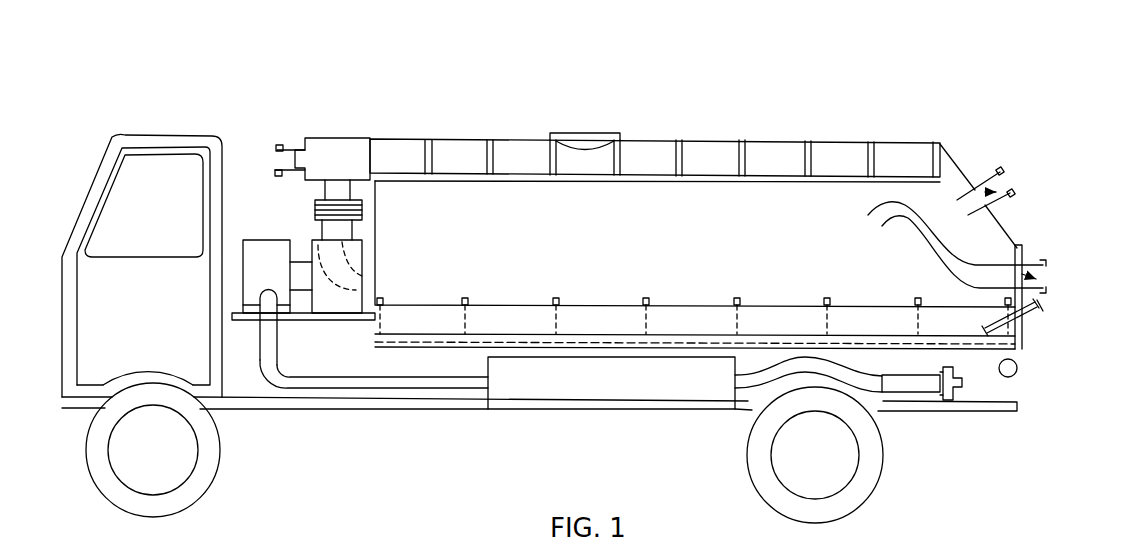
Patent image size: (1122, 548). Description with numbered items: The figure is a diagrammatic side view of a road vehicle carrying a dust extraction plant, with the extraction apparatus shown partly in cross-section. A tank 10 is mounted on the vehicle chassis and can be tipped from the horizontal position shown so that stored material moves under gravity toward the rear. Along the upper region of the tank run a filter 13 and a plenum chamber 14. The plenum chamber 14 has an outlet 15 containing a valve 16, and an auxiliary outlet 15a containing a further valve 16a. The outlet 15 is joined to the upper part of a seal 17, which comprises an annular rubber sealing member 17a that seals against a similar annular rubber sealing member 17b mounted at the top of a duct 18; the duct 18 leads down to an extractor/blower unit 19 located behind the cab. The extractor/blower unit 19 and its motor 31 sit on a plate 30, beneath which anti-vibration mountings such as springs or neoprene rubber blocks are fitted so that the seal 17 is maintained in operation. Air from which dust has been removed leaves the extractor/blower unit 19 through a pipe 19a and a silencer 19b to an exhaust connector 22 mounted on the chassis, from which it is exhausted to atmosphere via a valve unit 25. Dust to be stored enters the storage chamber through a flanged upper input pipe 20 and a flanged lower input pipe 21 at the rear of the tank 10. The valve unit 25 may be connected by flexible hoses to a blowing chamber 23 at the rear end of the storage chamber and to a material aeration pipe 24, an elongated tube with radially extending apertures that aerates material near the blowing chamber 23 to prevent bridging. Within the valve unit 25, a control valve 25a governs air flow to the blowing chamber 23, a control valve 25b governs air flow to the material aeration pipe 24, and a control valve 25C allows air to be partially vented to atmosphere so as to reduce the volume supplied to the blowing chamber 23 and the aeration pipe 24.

The tank 10 is at (953, 133).
The filter 13 is at (700, 178).
The plenum chamber 14 is at (828, 165).
The outlet 15 is at (348, 162).
The auxiliary outlet 15a is at (297, 150).
The valve 16 is at (340, 228).
The valve 16a is at (288, 160).
The seal 17 is at (370, 203).
The annular rubber sealing member 17a is at (345, 206).
The annular rubber sealing member 17b is at (360, 218).
The duct 18 is at (342, 232).
The extractor/blower unit 19 is at (253, 302).
The pipe 19a is at (433, 383).
The silencer 19b is at (608, 390).
The upper input pipe 20 is at (997, 170).
The lower input pipe 21 is at (1043, 262).
The exhaust connector 22 is at (897, 375).
The blowing chamber 23 is at (1017, 355).
The material aeration pipe 24 is at (1032, 310).
The valve unit 25 is at (940, 396).
The control valve 25a is at (950, 403).
The control valve 25b is at (943, 368).
The control valve 25C is at (967, 350).
The plate 30 is at (303, 320).
The motor 31 is at (340, 303).